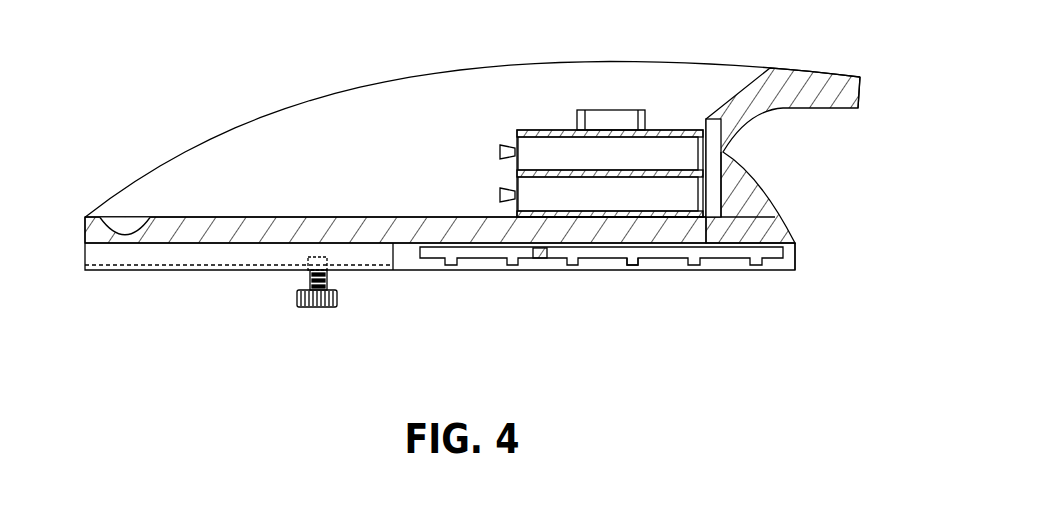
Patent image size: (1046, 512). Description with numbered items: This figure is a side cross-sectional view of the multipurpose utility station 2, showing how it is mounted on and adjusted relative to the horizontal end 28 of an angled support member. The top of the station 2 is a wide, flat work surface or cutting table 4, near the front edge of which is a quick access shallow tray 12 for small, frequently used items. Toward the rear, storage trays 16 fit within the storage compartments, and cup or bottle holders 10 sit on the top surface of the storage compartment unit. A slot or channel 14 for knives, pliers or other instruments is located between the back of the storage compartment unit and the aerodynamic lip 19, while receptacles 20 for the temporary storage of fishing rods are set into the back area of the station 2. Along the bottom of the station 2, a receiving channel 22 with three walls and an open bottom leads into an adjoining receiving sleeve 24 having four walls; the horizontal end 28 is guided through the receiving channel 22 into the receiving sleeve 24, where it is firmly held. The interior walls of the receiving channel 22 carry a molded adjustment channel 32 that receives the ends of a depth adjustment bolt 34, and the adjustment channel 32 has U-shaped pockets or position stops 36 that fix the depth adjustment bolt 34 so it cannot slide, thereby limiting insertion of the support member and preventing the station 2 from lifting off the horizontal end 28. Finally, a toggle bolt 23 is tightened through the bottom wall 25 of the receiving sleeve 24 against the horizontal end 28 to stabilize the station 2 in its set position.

The utility station 2 is at (703, 289).
The work surface or cutting table 4 is at (197, 217).
The cup or bottle holders 10 is at (619, 110).
The quick access shallow tray 12 is at (120, 228).
The slot or channel 14 is at (722, 157).
The storage trays 16 is at (512, 145).
The aerodynamic lip 19 is at (863, 77).
The receptacles 20 is at (825, 80).
The receiving channels 22 is at (787, 258).
The toggle bolt 23 is at (315, 308).
The receiving sleeves 24 is at (259, 262).
The bottom wall 25 is at (385, 270).
The horizontal end 28 is at (530, 130).
The molded adjustment channel 32 is at (602, 258).
The depth adjustment bolt 34 is at (540, 258).
The U-shaped pockets or position stops 36 is at (633, 265).